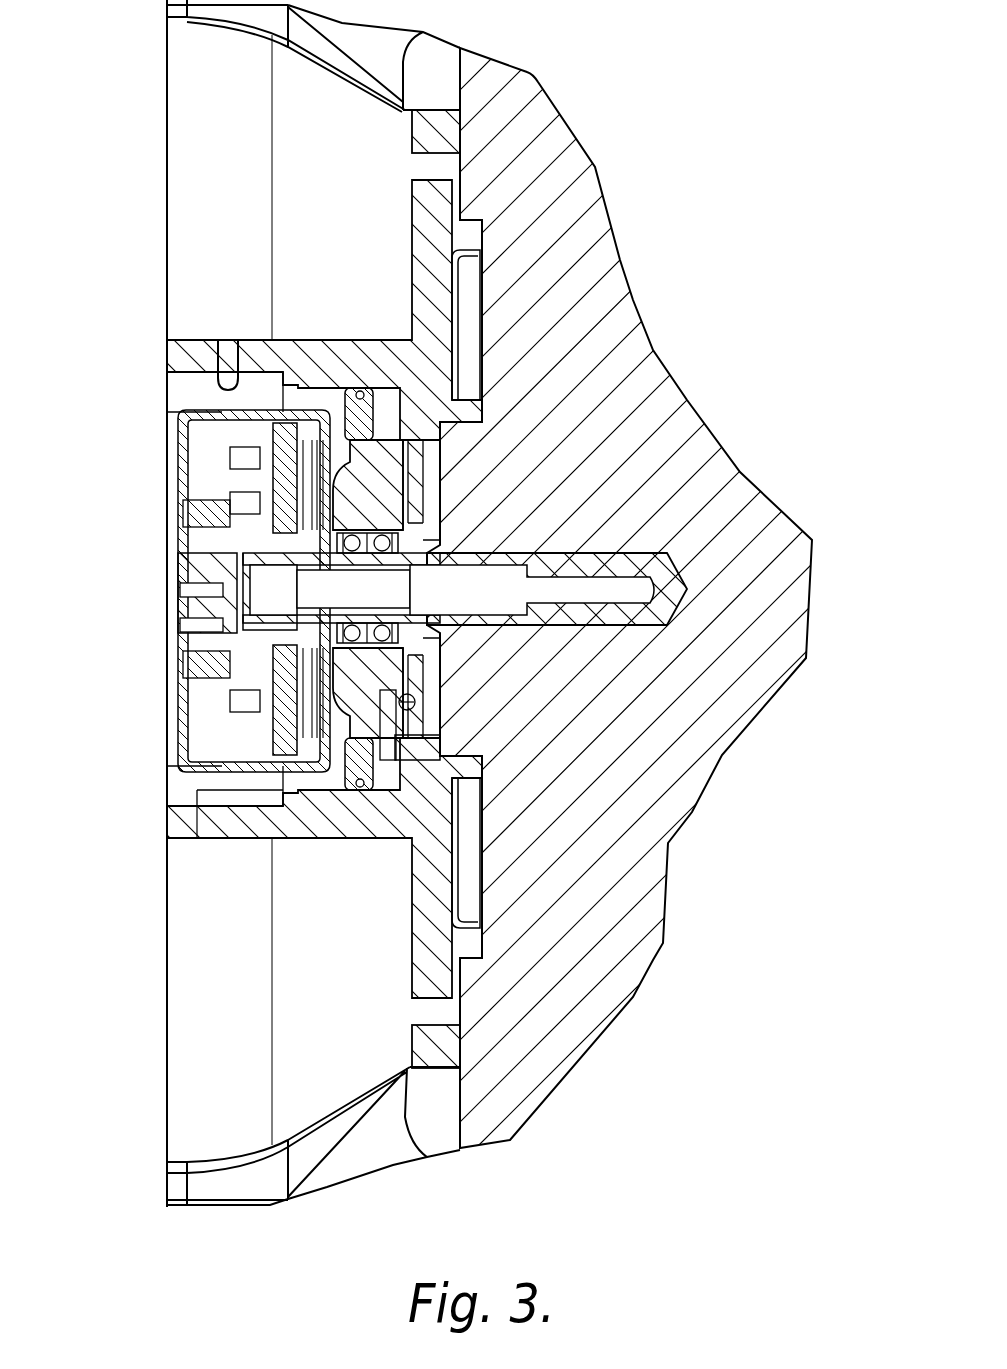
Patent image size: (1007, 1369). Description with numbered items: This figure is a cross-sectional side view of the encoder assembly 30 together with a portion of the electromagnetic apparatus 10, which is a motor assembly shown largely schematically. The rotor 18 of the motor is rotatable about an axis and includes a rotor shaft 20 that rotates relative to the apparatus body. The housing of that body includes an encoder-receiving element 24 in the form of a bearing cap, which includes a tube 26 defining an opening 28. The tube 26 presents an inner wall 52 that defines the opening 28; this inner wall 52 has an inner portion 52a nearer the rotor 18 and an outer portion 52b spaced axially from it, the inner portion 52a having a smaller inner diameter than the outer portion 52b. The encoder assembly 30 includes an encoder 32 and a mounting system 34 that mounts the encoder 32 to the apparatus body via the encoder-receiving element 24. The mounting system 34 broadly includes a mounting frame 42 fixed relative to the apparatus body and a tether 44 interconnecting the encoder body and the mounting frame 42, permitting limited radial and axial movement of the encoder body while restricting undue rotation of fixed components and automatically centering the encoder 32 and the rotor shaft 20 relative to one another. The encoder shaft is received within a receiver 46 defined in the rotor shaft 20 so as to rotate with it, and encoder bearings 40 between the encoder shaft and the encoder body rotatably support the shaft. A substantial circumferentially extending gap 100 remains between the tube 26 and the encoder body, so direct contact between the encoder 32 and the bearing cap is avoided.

The electromagnetic apparatus 10 is at (599, 73).
The rotor 18 is at (604, 470).
The rotor shaft 20 is at (464, 523).
The encoder-receiving element 24 is at (285, 330).
The tube 26 is at (186, 358).
The opening 28 is at (176, 800).
The encoder assembly 30 is at (320, 795).
The encoder 32 is at (180, 718).
The mounting system 34 is at (411, 386).
The encoder bearings 40 is at (350, 630).
The mounting frame 42 is at (347, 413).
The tether 44 is at (400, 470).
The receiver 46 is at (599, 583).
The inner wall 52 is at (186, 378).
The inner portion 52a is at (320, 396).
The outer portion 52b is at (230, 378).
The gap 100 is at (241, 789).